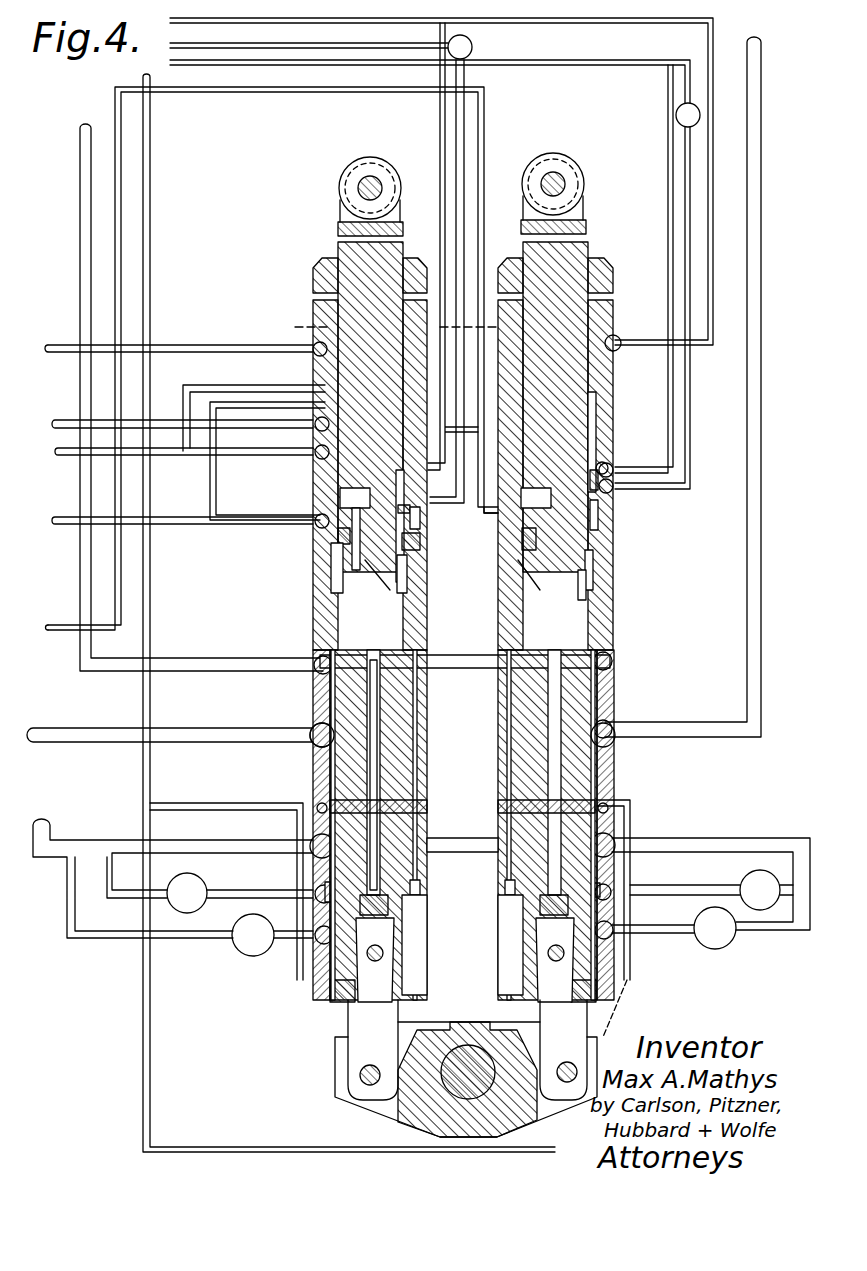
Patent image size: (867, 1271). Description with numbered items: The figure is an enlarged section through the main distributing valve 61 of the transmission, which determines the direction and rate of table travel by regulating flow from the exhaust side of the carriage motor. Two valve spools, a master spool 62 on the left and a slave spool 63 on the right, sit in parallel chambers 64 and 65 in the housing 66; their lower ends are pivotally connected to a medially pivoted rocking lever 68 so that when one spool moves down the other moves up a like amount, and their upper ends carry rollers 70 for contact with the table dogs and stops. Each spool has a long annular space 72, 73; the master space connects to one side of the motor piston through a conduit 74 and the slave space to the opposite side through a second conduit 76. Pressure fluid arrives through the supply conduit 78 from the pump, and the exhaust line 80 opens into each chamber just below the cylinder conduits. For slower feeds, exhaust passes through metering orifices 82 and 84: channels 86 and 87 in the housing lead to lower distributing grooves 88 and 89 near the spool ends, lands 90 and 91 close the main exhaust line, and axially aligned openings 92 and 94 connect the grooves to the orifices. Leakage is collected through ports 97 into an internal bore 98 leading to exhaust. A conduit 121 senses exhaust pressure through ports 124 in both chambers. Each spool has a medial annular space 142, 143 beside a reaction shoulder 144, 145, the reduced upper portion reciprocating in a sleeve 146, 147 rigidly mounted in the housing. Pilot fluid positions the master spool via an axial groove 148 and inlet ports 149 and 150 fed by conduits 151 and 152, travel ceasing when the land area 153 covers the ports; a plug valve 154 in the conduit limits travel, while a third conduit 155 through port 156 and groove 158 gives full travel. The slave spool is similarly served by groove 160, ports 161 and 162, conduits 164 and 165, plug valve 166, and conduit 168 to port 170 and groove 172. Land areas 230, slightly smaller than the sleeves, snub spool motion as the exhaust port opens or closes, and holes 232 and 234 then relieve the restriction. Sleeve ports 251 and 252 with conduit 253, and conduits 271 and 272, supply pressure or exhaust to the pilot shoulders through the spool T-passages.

The main distributing valve 61 is at (262, 1022).
The master valve spool 62 is at (340, 256).
The slave valve spool 63 is at (576, 262).
The valve spool chamber 64 is at (332, 604).
The valve spool chamber 65 is at (598, 612).
The housing 66 is at (310, 320).
The rocking lever 68 is at (395, 1118).
The rollers 70 is at (392, 178).
The annular space 72 is at (324, 706).
The annular space 73 is at (604, 700).
The conduit 74 is at (222, 728).
The second conduit 76 is at (752, 661).
The pressure fluid supply conduit 78 is at (218, 660).
The pressure fluid exhaust line 80 is at (275, 838).
The metering orifice 82 is at (252, 942).
The metering orifice 84 is at (196, 886).
The channel 86 is at (452, 812).
The channel 87 is at (462, 930).
The second annular distributing groove 88 is at (426, 890).
The second annular distributing groove 89 is at (428, 914).
The land area 90 is at (314, 884).
The land area 91 is at (610, 870).
The lower passage 92 is at (330, 948).
The upper passage 94 is at (320, 905).
The ports 97 is at (406, 660).
The internal bore 98 is at (408, 686).
The conduit 121 is at (152, 176).
The ports 124 is at (322, 804).
The medial annular space 142 is at (414, 574).
The medial annular space 143 is at (604, 575).
The reaction shoulder 144 is at (330, 586).
The reaction shoulder 145 is at (604, 596).
The sleeve 146 is at (330, 472).
The sleeve 147 is at (606, 408).
The axial groove 148 is at (418, 540).
The pressure fluid inlet port 149 is at (402, 478).
The pressure fluid inlet port 150 is at (422, 512).
The conduit 151 is at (310, 24).
The conduit 152 is at (456, 200).
The land area 153 is at (360, 510).
The plug valve 154 is at (473, 50).
The third pressure fluid conduit 155 is at (240, 524).
The port 156 is at (332, 532).
The axial groove 158 is at (334, 560).
The axial groove 160 is at (604, 525).
The pressure fluid inlet port 161 is at (604, 455).
The pressure fluid inlet port 162 is at (604, 475).
The conduit 164 is at (596, 66).
The conduit 165 is at (690, 398).
The plug valve 166 is at (694, 100).
The conduit 168 is at (488, 150).
The port 170 is at (536, 498).
The axial groove 172 is at (498, 520).
The land area 230 is at (428, 556).
The hole 232 is at (412, 618).
The hole 234 is at (515, 590).
The pressure fluid exhaust port 251 is at (218, 386).
The pressure fluid inlet port 252 is at (243, 424).
The conduit 253 is at (226, 495).
The pressure fluid exhaust conduit 271 is at (246, 456).
The pressure conduit 272 is at (318, 386).